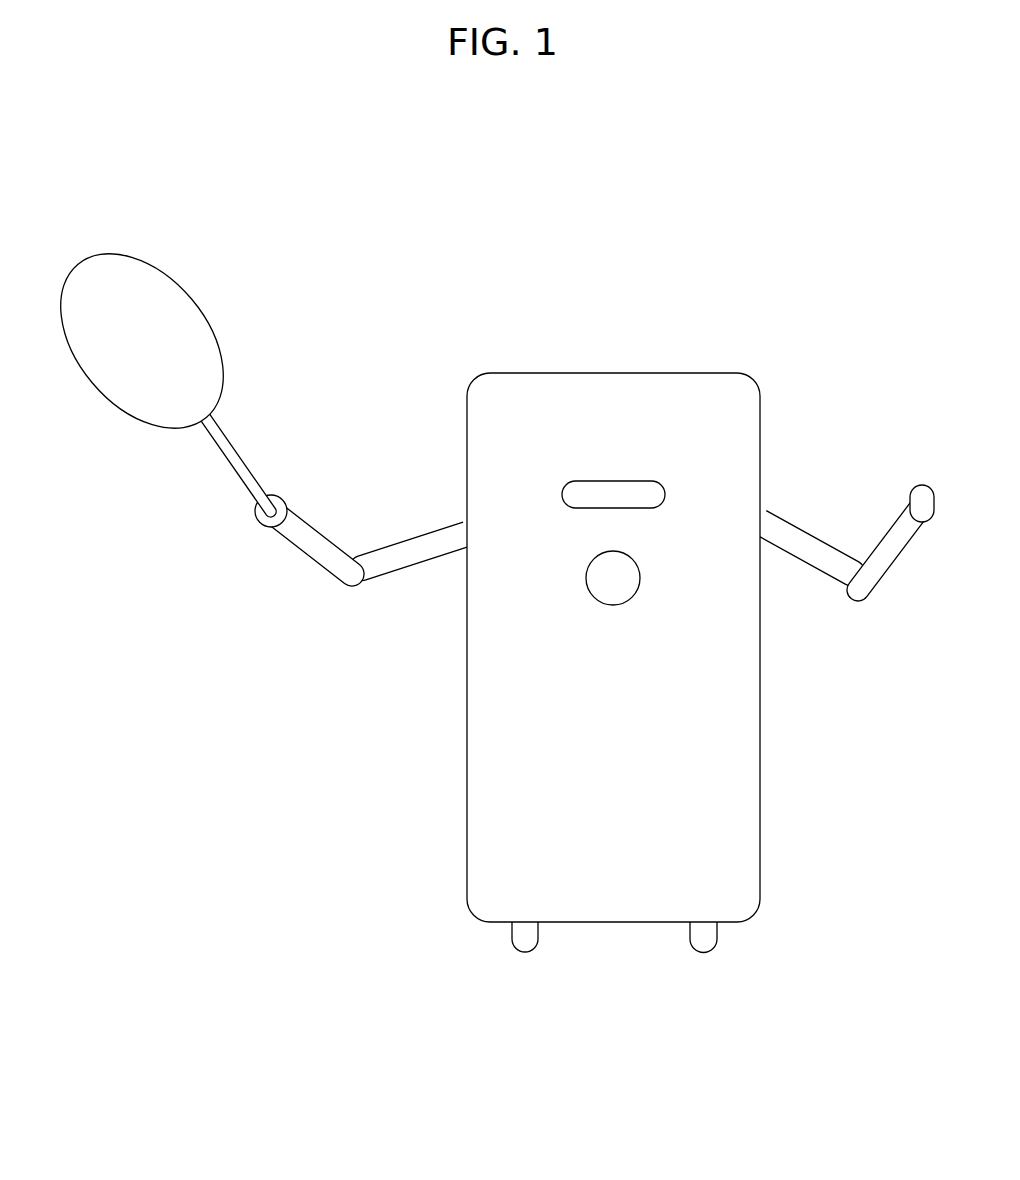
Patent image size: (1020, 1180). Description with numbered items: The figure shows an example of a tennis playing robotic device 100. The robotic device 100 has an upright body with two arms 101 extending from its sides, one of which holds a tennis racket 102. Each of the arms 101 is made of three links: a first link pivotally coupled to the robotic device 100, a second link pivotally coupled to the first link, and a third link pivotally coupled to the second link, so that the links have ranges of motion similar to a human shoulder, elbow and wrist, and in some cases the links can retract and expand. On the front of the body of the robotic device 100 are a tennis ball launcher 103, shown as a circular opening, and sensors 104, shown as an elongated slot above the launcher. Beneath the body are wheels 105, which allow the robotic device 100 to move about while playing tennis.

The tennis playing robotic device 100 is at (467, 745).
The arms 101 is at (332, 540).
The tennis racket 102 is at (192, 302).
The tennis ball launcher 103 is at (593, 603).
The sensors 104 is at (562, 493).
The wheels 105 is at (528, 953).